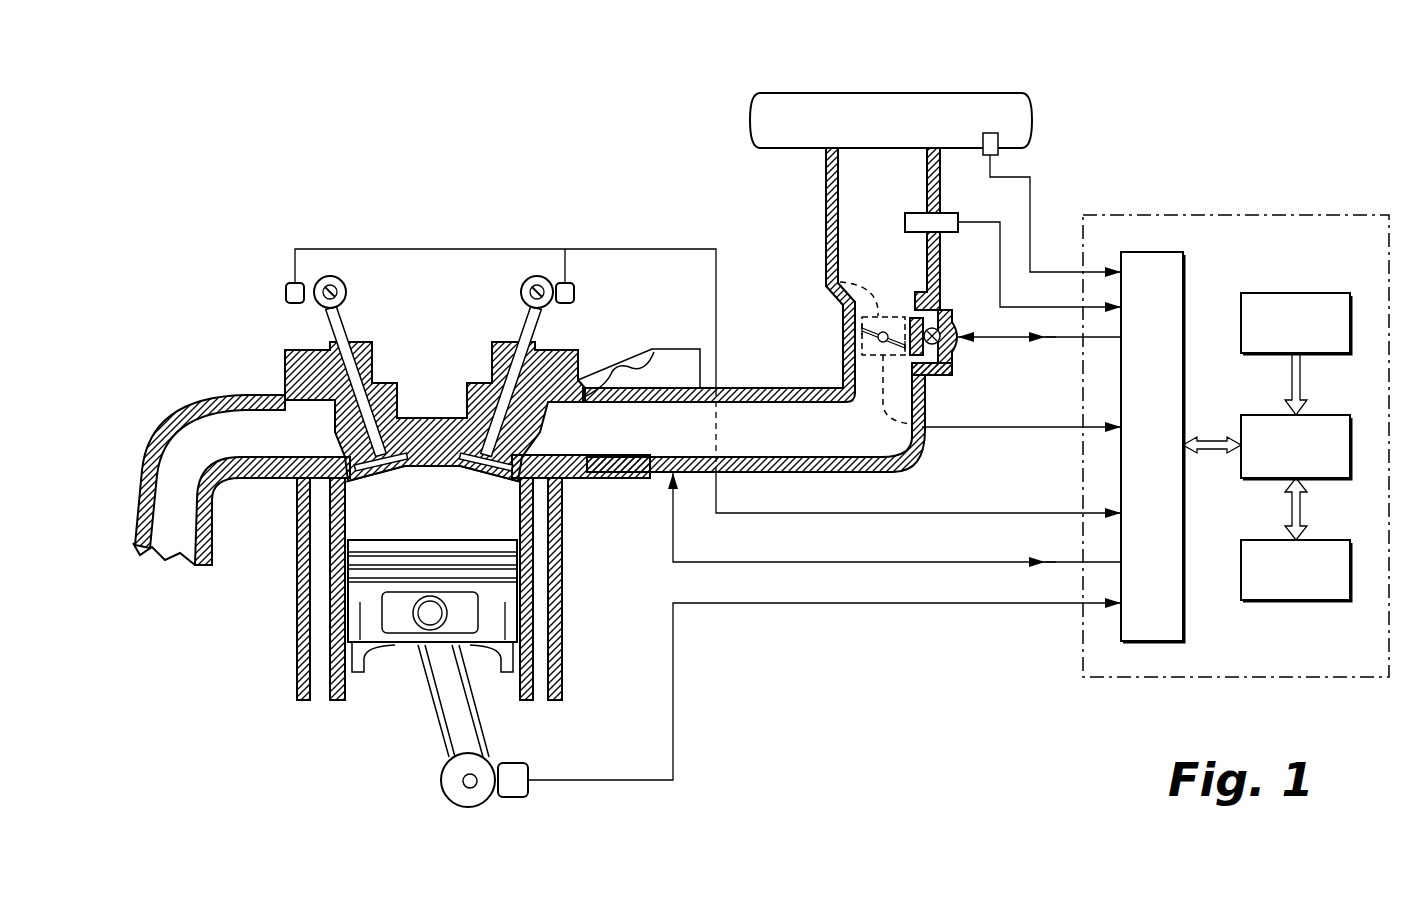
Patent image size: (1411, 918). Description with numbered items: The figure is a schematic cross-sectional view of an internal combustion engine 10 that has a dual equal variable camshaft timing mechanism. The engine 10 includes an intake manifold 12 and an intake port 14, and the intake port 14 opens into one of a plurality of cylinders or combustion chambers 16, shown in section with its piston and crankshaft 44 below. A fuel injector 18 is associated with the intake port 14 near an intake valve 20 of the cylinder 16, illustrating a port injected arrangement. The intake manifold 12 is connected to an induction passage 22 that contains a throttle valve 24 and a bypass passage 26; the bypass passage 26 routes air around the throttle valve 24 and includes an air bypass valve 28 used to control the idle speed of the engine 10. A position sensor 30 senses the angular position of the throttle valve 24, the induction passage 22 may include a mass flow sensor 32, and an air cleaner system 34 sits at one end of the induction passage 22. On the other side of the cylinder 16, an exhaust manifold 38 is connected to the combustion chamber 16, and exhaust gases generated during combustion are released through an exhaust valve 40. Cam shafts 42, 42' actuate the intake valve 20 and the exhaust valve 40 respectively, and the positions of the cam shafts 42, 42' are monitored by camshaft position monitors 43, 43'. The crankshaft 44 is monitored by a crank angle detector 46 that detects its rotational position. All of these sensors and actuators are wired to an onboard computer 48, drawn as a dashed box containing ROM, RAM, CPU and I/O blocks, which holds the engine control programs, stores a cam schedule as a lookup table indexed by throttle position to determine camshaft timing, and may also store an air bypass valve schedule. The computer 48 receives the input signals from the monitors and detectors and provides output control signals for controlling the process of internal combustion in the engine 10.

The internal combustion engine 10 is at (262, 255).
The intake manifold 12 is at (692, 475).
The intake port 14 is at (586, 470).
The cylinder or combustion chamber 16 is at (510, 683).
The fuel injector 18 is at (604, 376).
The intake valve 20 is at (520, 455).
The induction passage 22 is at (851, 233).
The throttle valve 24 is at (863, 347).
The bypass passage 26 is at (951, 332).
The air bypass valve 28 is at (942, 374).
The position sensor 30 is at (822, 268).
The mass flow sensor 32 is at (918, 213).
The air cleaner system 34 is at (811, 106).
The exhaust manifold 38 is at (139, 463).
The exhaust valve 40 is at (290, 472).
The cam shaft 42 is at (504, 373).
The cam shaft 42' is at (368, 373).
The camshaft position monitor 43 is at (610, 279).
The camshaft position monitor 43' is at (658, 381).
The crankshaft 44 is at (462, 783).
The crank angle detector 46 is at (512, 797).
The onboard computer 48 is at (1322, 208).